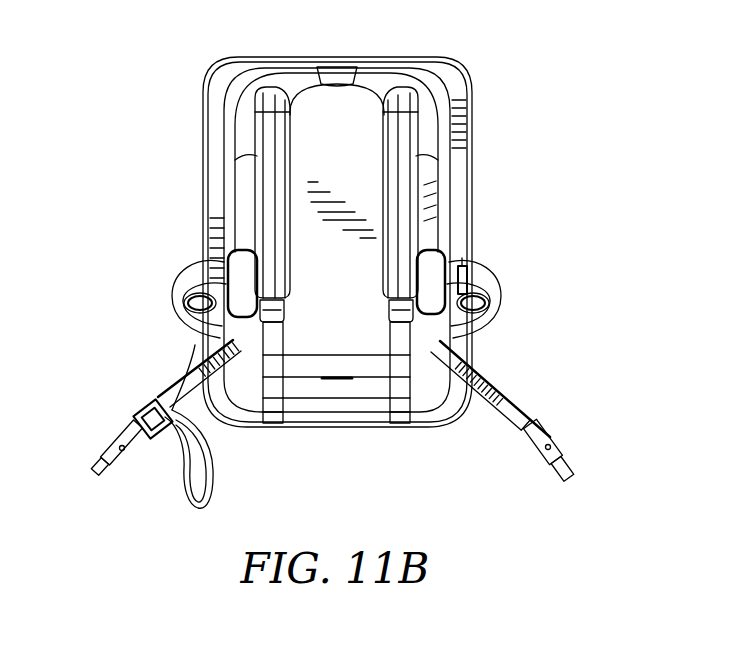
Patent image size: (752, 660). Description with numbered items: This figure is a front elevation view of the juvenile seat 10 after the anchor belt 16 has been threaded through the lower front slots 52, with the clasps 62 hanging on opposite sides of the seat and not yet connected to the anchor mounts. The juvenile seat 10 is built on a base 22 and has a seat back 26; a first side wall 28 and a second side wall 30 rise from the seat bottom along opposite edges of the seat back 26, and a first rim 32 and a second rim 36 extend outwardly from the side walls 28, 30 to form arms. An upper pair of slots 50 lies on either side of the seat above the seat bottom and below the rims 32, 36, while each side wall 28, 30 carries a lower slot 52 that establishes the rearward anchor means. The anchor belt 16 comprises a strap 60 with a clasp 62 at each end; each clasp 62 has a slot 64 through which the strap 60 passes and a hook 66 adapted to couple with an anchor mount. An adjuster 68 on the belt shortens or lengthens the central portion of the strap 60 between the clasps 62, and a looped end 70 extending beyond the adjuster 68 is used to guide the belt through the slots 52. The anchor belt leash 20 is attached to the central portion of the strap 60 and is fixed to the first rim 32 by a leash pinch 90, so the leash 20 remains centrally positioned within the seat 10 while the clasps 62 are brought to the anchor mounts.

The juvenile seat 10 is at (333, 45).
The anchor belt 16 is at (475, 414).
The anchor belt leash 20 is at (480, 317).
The base 22 is at (398, 414).
The seat back 26 is at (360, 132).
The first side wall 28 is at (443, 188).
The second side wall 30 is at (228, 190).
The first rim 32 is at (458, 217).
The second rim 36 is at (212, 225).
The upper slots 50 is at (227, 268).
The lower slots 52 is at (200, 337).
The strap 60 is at (473, 369).
The clasp 62 is at (131, 478).
The slot 64 is at (117, 440).
The hook 66 is at (100, 480).
The adjuster 68 is at (150, 403).
The looped end 70 is at (213, 492).
The leash pinch 90 is at (467, 284).